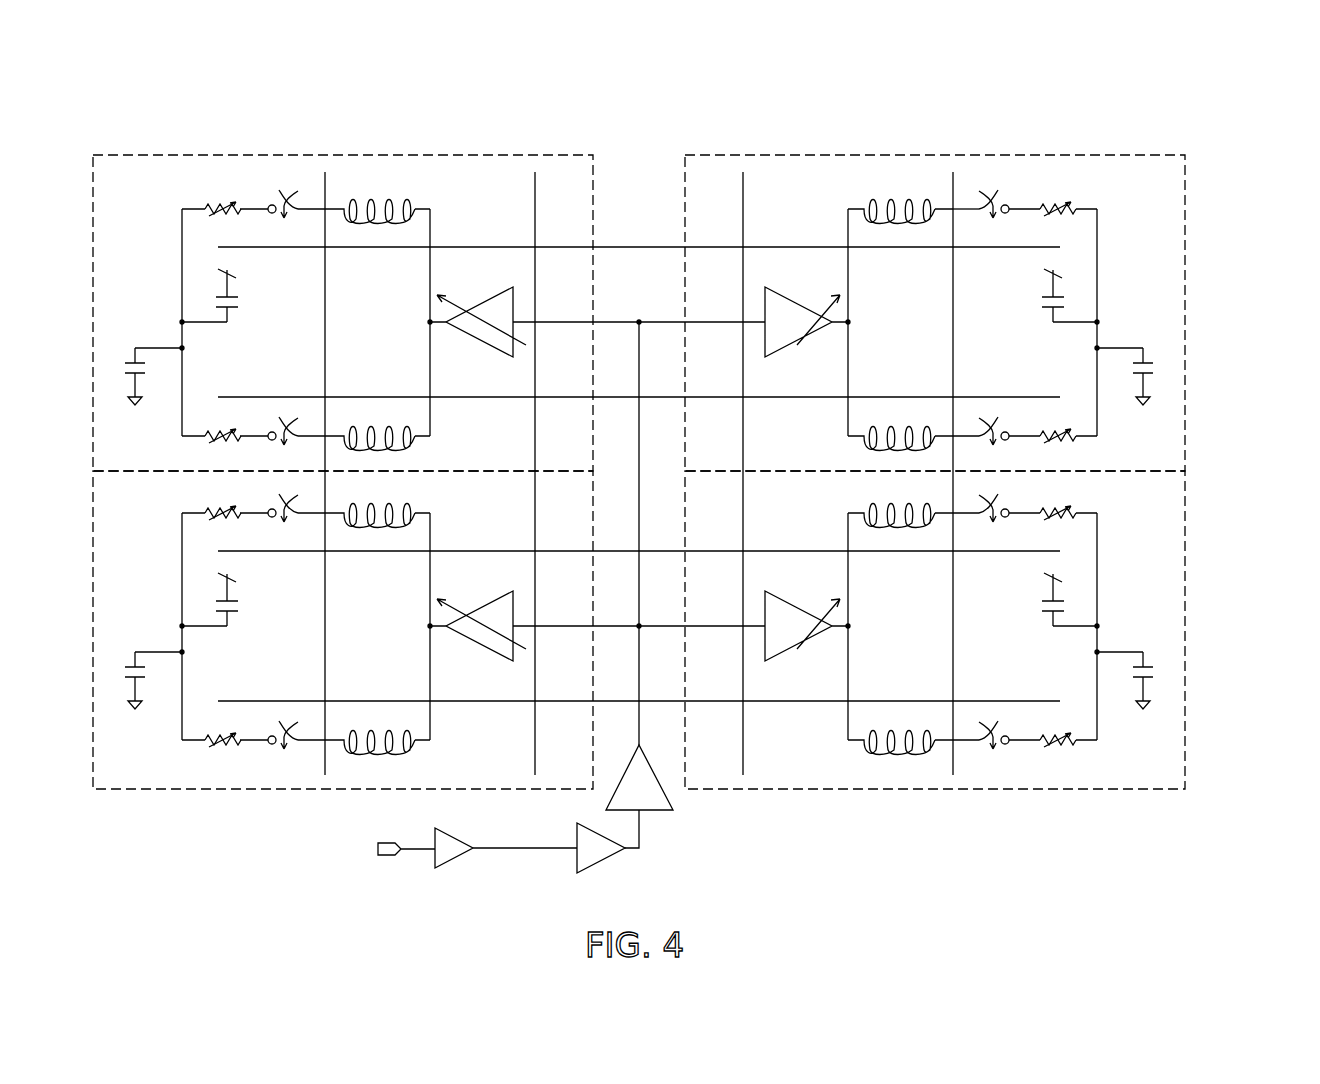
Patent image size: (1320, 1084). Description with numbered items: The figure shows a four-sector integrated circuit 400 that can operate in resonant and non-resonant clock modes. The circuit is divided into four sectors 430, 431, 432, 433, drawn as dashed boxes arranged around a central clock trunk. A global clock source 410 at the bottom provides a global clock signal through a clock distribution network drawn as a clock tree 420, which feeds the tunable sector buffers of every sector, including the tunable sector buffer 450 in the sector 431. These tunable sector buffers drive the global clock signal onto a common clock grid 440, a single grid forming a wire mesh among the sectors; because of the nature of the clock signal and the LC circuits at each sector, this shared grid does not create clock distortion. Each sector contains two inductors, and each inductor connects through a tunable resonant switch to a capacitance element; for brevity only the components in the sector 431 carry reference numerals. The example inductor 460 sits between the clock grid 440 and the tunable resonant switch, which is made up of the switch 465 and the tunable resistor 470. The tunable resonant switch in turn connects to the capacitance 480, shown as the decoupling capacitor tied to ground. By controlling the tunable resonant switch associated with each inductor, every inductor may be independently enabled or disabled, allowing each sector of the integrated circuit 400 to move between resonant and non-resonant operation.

The four-sector integrated circuit 400 is at (699, 517).
The global clock source 410 is at (362, 873).
The clock tree 420 is at (502, 870).
The sector 430 is at (133, 154).
The S1 sector 431 is at (1150, 154).
The sector 432 is at (131, 790).
The sector 433 is at (1152, 790).
The clock grid 440 is at (955, 757).
The tunable sector buffer 450 is at (808, 279).
The inductor 460 is at (904, 184).
The switch 465 is at (1000, 174).
The tunable resistor 470 is at (1064, 184).
The capacitance 480 is at (1179, 318).